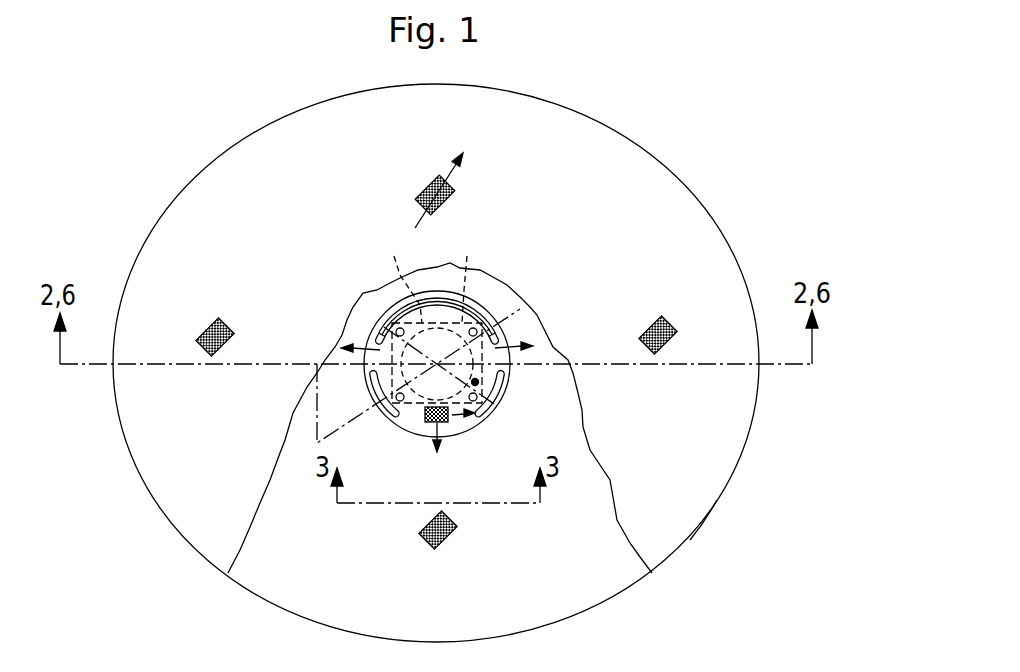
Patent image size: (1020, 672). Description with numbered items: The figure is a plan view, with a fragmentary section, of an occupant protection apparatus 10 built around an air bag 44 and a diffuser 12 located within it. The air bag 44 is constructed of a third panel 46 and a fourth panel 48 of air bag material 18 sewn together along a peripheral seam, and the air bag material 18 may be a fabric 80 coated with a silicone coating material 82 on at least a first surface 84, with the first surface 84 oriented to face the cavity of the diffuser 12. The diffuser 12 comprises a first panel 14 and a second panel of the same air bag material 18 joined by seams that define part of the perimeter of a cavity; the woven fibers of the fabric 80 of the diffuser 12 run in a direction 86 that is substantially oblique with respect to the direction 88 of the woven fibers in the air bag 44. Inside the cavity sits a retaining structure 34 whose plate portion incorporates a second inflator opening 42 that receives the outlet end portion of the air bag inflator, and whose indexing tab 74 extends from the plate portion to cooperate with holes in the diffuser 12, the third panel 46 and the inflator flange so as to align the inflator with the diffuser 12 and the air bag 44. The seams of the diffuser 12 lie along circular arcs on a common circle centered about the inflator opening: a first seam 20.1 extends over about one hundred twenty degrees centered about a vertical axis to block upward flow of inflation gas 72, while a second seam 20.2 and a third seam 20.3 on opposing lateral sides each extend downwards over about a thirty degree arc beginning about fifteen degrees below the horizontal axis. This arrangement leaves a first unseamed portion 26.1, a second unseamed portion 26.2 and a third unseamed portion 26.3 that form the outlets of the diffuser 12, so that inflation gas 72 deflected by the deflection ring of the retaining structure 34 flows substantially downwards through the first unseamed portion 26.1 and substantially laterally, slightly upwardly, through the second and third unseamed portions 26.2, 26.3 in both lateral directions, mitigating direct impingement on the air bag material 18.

The occupant protection apparatus 10 is at (640, 100).
The air bag 44 is at (718, 500).
The third panel 46 is at (325, 589).
The fourth panel 48 is at (695, 452).
The silicone coating material 82 is at (596, 559).
The first surface 84 is at (596, 594).
The air bag material 18 is at (622, 196).
The first panel 14 is at (474, 426).
The diffuser 12 is at (481, 302).
The indexing tab 74 is at (479, 383).
The retaining structure 34 is at (403, 277).
The second inflator opening 42 is at (468, 277).
The first seam 20.1 is at (377, 336).
The second seam 20.2 is at (484, 410).
The third seam 20.3 is at (370, 376).
The first unseamed portion 26.1 is at (393, 427).
The second unseamed portion 26.2 is at (520, 330).
The third unseamed portion 26.3 is at (353, 331).
The inflation gas 72 is at (337, 337).
The direction 86 is at (452, 424).
The direction 88 is at (458, 176).
The fabric 80 is at (676, 314).